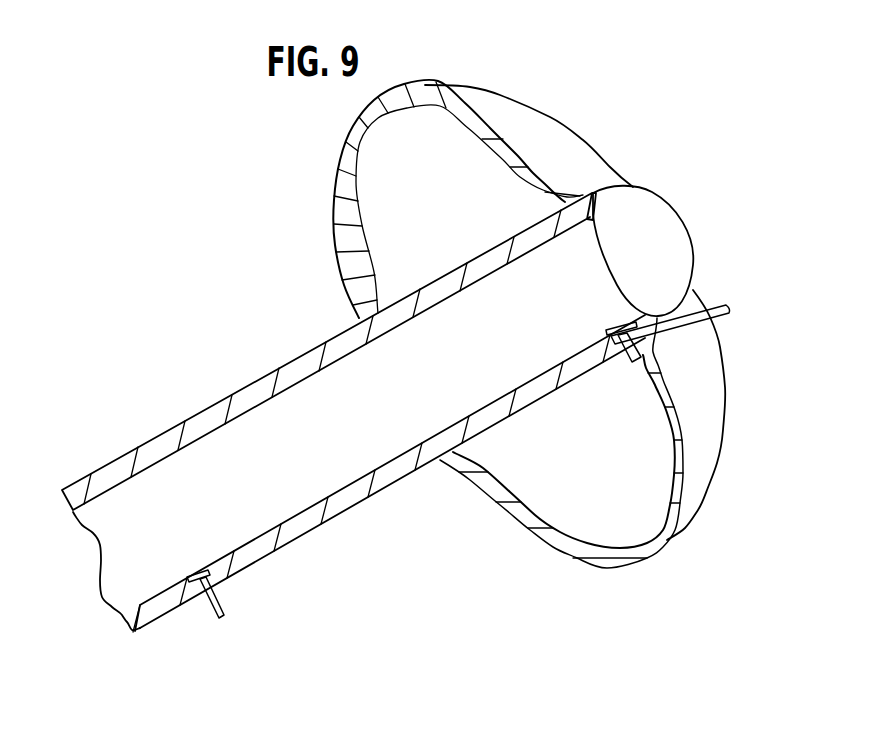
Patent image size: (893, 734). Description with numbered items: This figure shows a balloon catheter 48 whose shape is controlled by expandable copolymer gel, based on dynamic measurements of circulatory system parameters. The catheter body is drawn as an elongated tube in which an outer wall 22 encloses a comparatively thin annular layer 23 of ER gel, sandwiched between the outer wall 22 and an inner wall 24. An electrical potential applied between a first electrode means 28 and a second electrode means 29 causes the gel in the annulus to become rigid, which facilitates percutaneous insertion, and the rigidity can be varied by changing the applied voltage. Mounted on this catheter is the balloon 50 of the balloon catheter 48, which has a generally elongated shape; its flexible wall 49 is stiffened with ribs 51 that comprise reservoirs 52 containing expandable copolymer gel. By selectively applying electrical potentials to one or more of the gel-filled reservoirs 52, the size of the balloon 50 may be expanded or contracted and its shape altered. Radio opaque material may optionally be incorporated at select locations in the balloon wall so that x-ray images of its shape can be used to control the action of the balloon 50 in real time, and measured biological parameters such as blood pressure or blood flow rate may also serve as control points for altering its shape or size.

The outer wall 22 is at (208, 410).
The annular layer of ER gel 23 is at (268, 388).
The inner wall 24 is at (107, 500).
The first electrode means 28 is at (220, 592).
The second electrode means 29 is at (728, 315).
The balloon catheter 48 is at (682, 193).
The flexible wall 49 is at (717, 460).
The balloon 50 is at (333, 153).
The ribs 51 is at (673, 417).
The reservoirs 52 is at (680, 457).